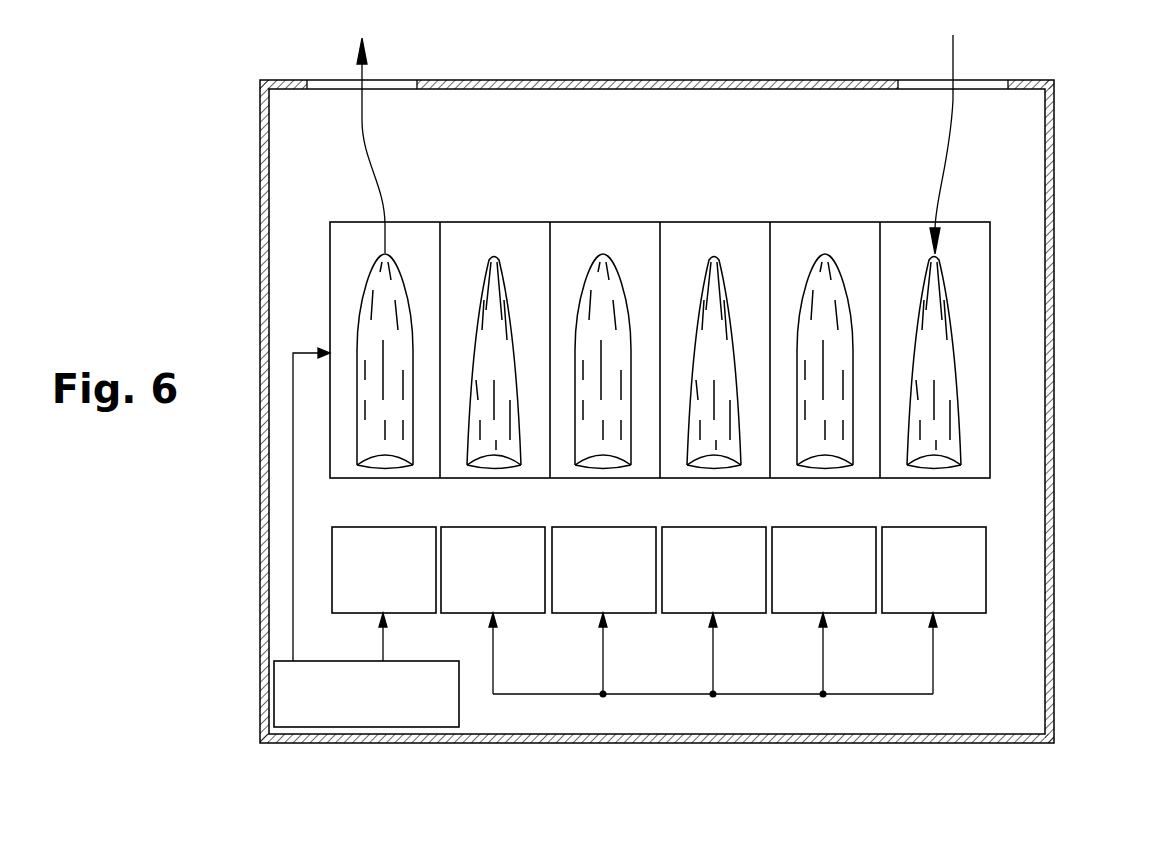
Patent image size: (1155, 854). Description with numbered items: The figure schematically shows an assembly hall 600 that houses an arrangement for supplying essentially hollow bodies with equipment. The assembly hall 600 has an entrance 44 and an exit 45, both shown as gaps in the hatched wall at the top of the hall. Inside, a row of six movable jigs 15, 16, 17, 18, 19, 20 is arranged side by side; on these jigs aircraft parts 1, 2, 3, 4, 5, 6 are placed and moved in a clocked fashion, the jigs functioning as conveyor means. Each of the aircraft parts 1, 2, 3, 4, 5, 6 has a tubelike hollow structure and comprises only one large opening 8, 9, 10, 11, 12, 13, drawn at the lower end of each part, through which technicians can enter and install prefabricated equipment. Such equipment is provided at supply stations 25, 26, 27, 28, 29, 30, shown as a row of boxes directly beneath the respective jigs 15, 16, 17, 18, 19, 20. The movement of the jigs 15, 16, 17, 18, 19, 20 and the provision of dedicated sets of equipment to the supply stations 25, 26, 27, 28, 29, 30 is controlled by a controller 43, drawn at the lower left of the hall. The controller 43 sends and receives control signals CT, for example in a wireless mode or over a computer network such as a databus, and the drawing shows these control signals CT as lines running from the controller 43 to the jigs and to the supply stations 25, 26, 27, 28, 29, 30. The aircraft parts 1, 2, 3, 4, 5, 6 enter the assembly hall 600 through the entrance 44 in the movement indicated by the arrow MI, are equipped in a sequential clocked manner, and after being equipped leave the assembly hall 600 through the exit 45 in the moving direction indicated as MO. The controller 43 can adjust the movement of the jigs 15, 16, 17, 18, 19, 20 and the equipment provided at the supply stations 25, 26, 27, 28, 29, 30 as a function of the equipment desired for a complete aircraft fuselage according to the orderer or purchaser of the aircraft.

The aircraft part 1 is at (378, 346).
The aircraft part 2 is at (487, 426).
The aircraft part 3 is at (596, 346).
The aircraft part 4 is at (707, 426).
The aircraft part 5 is at (818, 346).
The aircraft part 6 is at (927, 426).
The large opening 8 is at (382, 462).
The large opening 9 is at (491, 462).
The large opening 10 is at (600, 462).
The large opening 11 is at (711, 462).
The large opening 12 is at (822, 462).
The large opening 13 is at (931, 462).
The movable jig 15 is at (417, 250).
The movable jig 16 is at (527, 250).
The movable jig 17 is at (637, 250).
The movable jig 18 is at (747, 250).
The movable jig 19 is at (857, 250).
The movable jig 20 is at (965, 250).
The supply station 25 is at (369, 588).
The supply station 26 is at (478, 588).
The supply station 27 is at (589, 588).
The supply station 28 is at (699, 588).
The supply station 29 is at (809, 588).
The supply station 30 is at (919, 588).
The controller 43 is at (351, 708).
The entrance 44 is at (976, 82).
The exit 45 is at (337, 82).
The assembly hall 600 is at (1055, 197).
The moving direction MO is at (362, 140).
The arrow indicating entering movement MI is at (948, 140).
The control signals CT is at (293, 506).